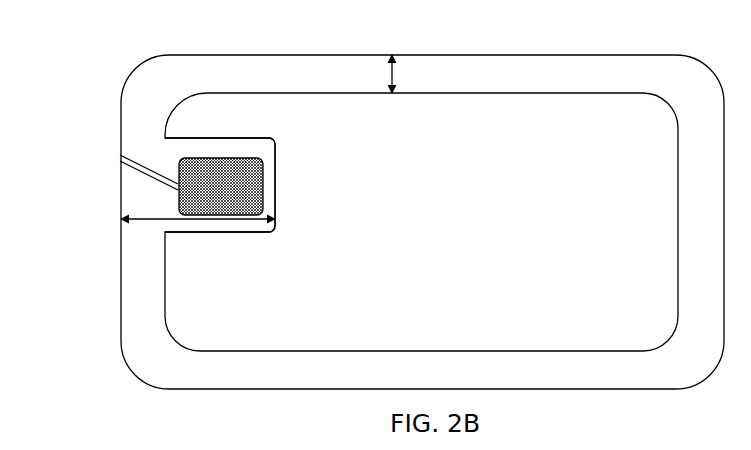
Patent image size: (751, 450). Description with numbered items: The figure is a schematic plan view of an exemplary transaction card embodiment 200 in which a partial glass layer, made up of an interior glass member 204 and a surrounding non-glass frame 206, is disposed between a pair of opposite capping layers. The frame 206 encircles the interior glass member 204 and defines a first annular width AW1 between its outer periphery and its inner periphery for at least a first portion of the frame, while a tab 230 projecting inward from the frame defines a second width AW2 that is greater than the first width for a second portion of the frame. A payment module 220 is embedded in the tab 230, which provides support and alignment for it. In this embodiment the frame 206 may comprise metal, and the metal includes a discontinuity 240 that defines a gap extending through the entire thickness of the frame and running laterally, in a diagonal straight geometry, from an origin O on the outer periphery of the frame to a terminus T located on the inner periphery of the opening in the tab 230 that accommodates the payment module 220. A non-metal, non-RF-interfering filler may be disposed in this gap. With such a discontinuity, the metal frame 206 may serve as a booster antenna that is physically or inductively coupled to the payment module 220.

The transaction card embodiment 200 is at (378, 217).
The interior glass member 204 is at (518, 277).
The frame 206 is at (362, 362).
The payment module 220 is at (262, 185).
The tab 230 is at (273, 162).
The discontinuity 240 is at (148, 167).
The origin O is at (118, 155).
The terminus T is at (175, 177).
The first annular width AW1 is at (392, 73).
The second width AW2 is at (232, 220).